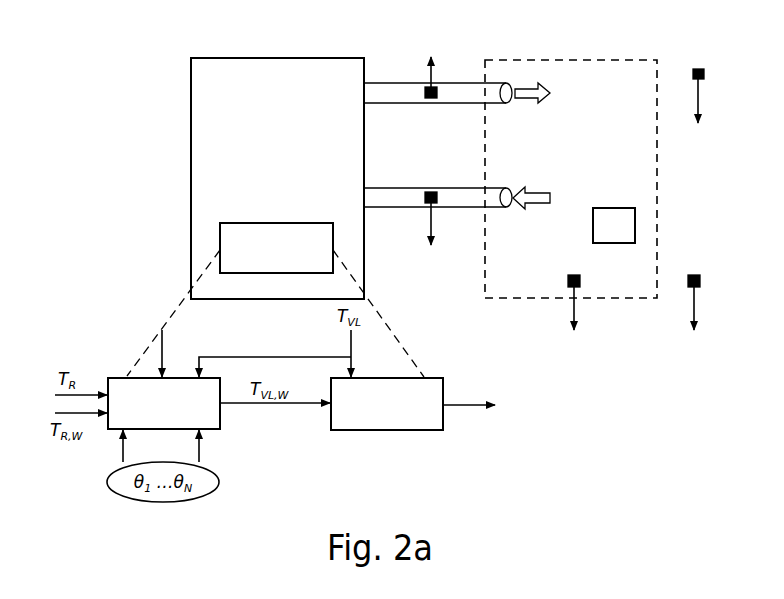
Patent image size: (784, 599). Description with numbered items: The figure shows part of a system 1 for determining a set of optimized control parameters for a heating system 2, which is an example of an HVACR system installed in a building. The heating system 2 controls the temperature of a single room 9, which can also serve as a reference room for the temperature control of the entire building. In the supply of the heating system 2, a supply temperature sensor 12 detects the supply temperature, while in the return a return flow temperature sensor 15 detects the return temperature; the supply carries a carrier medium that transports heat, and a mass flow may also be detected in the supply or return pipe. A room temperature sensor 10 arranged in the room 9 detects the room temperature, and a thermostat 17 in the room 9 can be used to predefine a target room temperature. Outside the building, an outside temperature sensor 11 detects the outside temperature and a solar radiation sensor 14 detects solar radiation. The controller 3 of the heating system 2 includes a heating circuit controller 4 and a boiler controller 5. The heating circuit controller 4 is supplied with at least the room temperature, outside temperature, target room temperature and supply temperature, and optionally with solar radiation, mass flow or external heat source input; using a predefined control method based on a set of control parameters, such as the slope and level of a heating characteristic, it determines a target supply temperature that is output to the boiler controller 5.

The system 1 is at (143, 84).
The heating system 2 is at (277, 178).
The controller 3 is at (276, 248).
The heating circuit controller 4 is at (164, 403).
The boiler controller 5 is at (387, 404).
The room 9 is at (545, 189).
The room temperature sensor 10 is at (585, 313).
The outside temperature sensor 11 is at (682, 314).
The supply temperature sensor 12 is at (428, 80).
The solar radiation sensor 14 is at (688, 103).
The return flow temperature sensor 15 is at (429, 219).
The thermostat 17 is at (614, 225).